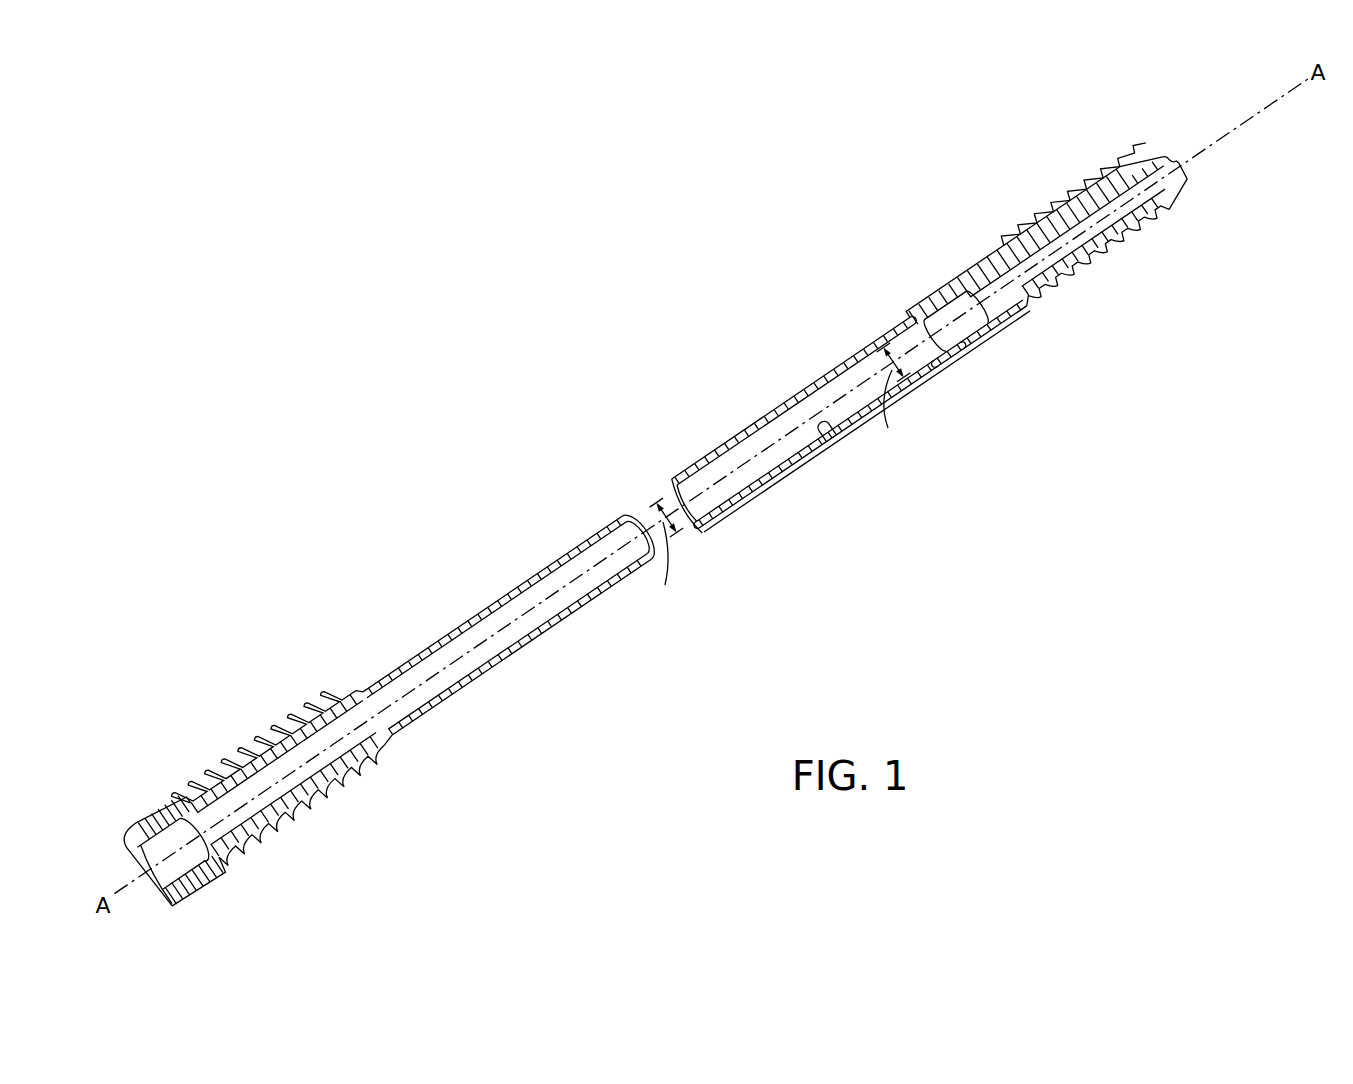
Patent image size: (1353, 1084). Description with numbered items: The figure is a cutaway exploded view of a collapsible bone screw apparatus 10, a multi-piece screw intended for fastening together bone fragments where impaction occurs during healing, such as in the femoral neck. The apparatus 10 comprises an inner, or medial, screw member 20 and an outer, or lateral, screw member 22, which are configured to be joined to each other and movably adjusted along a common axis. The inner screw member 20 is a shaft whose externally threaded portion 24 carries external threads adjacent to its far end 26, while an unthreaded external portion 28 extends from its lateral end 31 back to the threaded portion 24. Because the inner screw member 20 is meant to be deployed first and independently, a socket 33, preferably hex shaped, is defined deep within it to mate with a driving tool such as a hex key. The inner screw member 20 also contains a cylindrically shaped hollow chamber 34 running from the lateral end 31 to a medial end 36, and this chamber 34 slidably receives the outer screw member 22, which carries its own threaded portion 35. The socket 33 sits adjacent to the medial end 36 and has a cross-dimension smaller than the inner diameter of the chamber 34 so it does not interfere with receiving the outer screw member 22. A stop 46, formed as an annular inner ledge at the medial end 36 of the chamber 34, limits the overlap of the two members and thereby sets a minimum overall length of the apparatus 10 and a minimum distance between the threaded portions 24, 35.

The collapsible bone screw apparatus 10 is at (370, 436).
The inner screw member 20 is at (937, 433).
The outer screw member 22 is at (486, 746).
The externally threaded portion 24 is at (1090, 284).
The far end 26 is at (1195, 174).
The unthreaded external portion 28 is at (737, 415).
The lateral end 31 is at (707, 552).
The inner screw opening (socket) 33 is at (964, 344).
The hollow chamber 34 is at (823, 444).
The threaded portion 35 is at (298, 838).
The medial end 36 is at (939, 362).
The stop (inner ledge) 46 is at (908, 320).